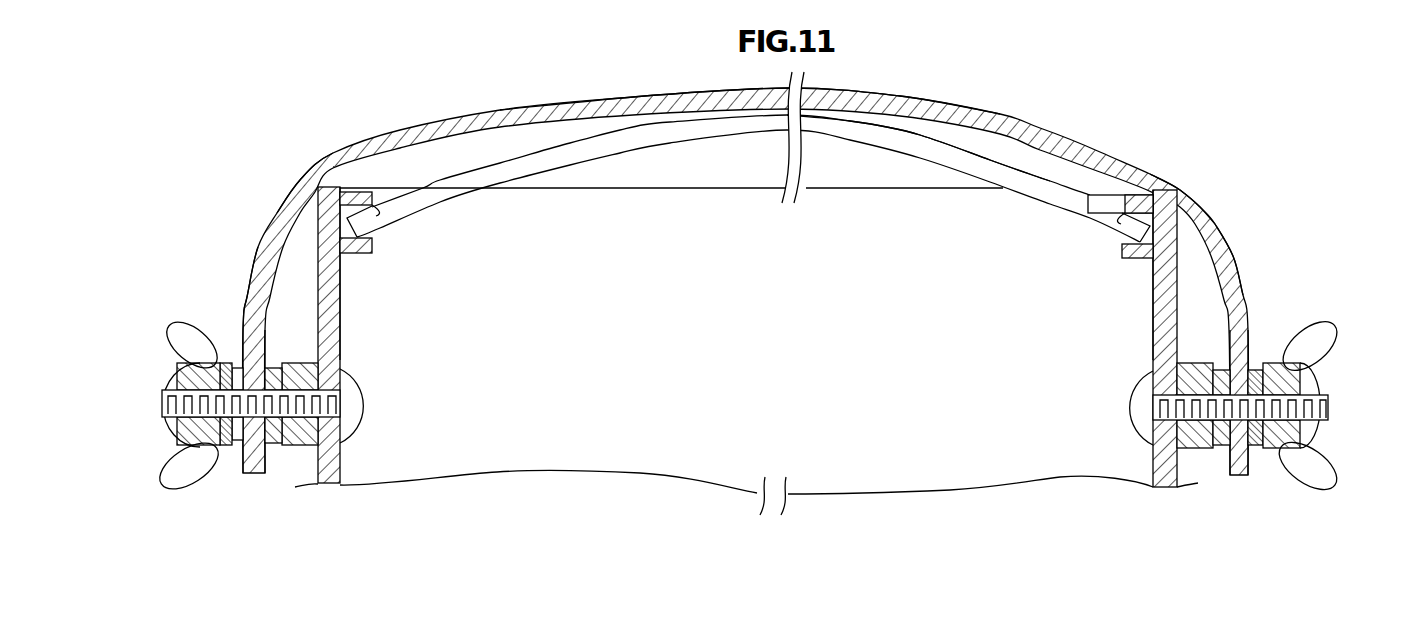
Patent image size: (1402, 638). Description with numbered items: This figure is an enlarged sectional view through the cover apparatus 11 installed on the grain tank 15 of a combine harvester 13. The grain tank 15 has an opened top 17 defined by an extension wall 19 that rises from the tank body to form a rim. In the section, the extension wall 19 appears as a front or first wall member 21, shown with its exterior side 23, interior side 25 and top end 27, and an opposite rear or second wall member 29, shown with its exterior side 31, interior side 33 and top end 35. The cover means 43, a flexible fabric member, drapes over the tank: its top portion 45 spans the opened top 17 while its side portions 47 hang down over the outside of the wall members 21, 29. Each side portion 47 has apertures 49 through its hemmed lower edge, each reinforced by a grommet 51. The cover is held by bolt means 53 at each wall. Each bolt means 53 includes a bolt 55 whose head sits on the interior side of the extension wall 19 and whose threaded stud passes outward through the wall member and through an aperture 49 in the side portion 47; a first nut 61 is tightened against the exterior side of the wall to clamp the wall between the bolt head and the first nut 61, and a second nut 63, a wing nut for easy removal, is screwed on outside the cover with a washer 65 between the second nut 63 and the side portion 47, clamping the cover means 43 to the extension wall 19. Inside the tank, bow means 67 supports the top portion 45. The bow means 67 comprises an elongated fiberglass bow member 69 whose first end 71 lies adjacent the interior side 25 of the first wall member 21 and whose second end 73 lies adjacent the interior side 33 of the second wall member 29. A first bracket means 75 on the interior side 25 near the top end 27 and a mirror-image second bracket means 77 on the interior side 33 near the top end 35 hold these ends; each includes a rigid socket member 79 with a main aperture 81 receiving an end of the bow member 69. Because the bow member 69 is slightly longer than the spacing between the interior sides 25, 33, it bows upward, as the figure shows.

The cover apparatus 11 is at (1205, 111).
The combine harvester 13 is at (497, 478).
The grain tank 15 is at (390, 488).
The opened top 17 is at (565, 178).
The extension wall 19 is at (536, 407).
The first wall member 21 is at (340, 315).
The exterior side 23 is at (318, 280).
The interior side 25 is at (340, 286).
The top end 27 is at (318, 163).
The second wall member 29 is at (1155, 330).
The exterior side 31 is at (1180, 277).
The interior side 33 is at (1155, 292).
The top end 35 is at (1168, 188).
The cover means 43 is at (877, 97).
The top portion 45 is at (668, 92).
The side portions 47 is at (260, 304).
The apertures 49 is at (289, 440).
The grommet 51 is at (240, 432).
The bolt means 53 is at (160, 430).
The bolt 55 is at (163, 403).
The first nut 61 is at (300, 363).
The second nut 63 is at (190, 382).
The washer 65 is at (226, 446).
The bow means 67 is at (988, 167).
The bow member 69 is at (993, 160).
The first end 71 is at (378, 222).
The second end 73 is at (1133, 233).
The first bracket means 75 is at (373, 250).
The second bracket means 77 is at (1123, 249).
The socket member 79 is at (355, 190).
The main aperture 81 is at (373, 208).